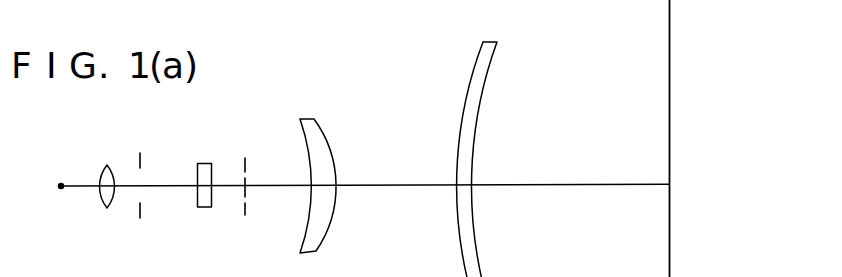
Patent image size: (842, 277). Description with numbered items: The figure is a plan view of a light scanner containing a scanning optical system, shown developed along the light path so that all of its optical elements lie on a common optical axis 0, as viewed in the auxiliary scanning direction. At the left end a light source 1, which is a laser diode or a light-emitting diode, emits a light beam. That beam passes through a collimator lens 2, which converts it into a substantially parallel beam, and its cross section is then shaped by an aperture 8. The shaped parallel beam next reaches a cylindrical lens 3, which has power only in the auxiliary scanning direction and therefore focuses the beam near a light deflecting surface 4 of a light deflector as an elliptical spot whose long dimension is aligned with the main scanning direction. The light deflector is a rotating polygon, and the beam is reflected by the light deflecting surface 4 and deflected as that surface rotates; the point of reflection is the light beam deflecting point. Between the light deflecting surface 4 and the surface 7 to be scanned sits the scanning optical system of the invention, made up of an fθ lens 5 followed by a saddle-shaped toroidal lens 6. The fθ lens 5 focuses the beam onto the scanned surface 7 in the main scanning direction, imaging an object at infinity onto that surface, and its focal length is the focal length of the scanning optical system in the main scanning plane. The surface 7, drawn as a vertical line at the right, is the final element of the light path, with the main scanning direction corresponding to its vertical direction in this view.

The optical axis 0 is at (412, 183).
The light source 1 is at (63, 183).
The collimator lens 2 is at (112, 163).
The cylindrical lens 3 is at (208, 163).
The light deflecting surface 4 is at (245, 160).
The fθ lens 5 is at (312, 128).
The saddle-shaped toroidal lens 6 is at (486, 58).
The surface to be scanned 7 is at (670, 25).
The aperture 8 is at (140, 160).